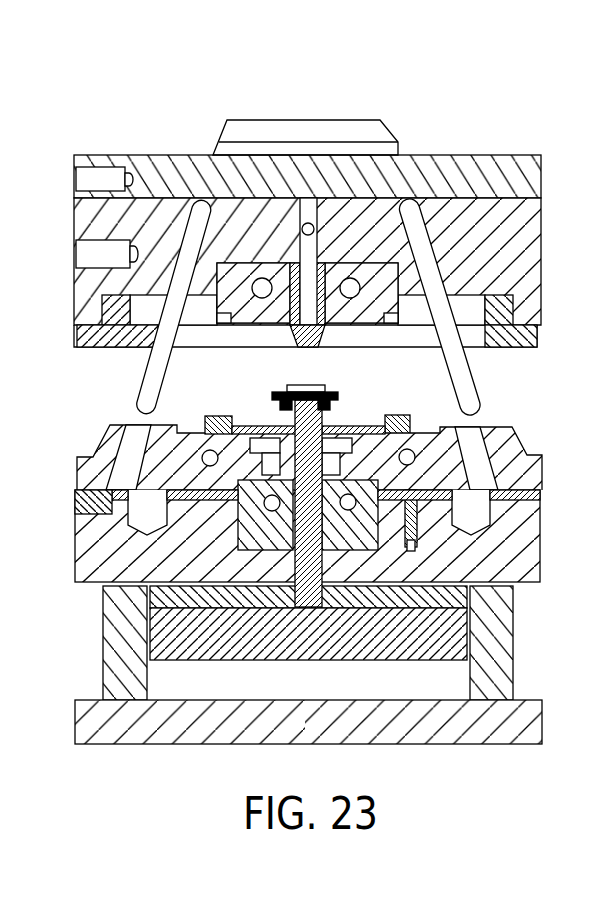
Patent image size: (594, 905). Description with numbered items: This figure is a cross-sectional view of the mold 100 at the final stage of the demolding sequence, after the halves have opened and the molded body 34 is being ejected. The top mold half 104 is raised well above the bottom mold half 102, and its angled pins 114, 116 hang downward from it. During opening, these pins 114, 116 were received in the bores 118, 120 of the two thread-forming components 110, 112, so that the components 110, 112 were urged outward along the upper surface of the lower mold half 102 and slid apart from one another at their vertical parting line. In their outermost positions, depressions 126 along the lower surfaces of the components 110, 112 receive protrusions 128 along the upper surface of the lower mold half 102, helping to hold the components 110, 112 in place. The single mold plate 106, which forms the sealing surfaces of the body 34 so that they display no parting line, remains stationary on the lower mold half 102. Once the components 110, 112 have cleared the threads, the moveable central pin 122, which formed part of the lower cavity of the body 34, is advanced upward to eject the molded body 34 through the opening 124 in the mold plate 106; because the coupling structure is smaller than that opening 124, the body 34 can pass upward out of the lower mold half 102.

The mold 100 is at (438, 90).
The bottom mold half 102 is at (88, 583).
The top mold half 104 is at (497, 157).
The mold plate 106 is at (398, 420).
The thread-forming component 110 is at (98, 446).
The thread-forming component 112 is at (526, 446).
The angled pin 114 is at (202, 205).
The angled pin 116 is at (405, 200).
The bore 118 is at (160, 430).
The bore 120 is at (483, 425).
The central pin 122 is at (277, 420).
The opening 124 is at (345, 432).
The depression 126 is at (543, 472).
The protrusion 128 is at (98, 490).
The body 34 is at (325, 395).